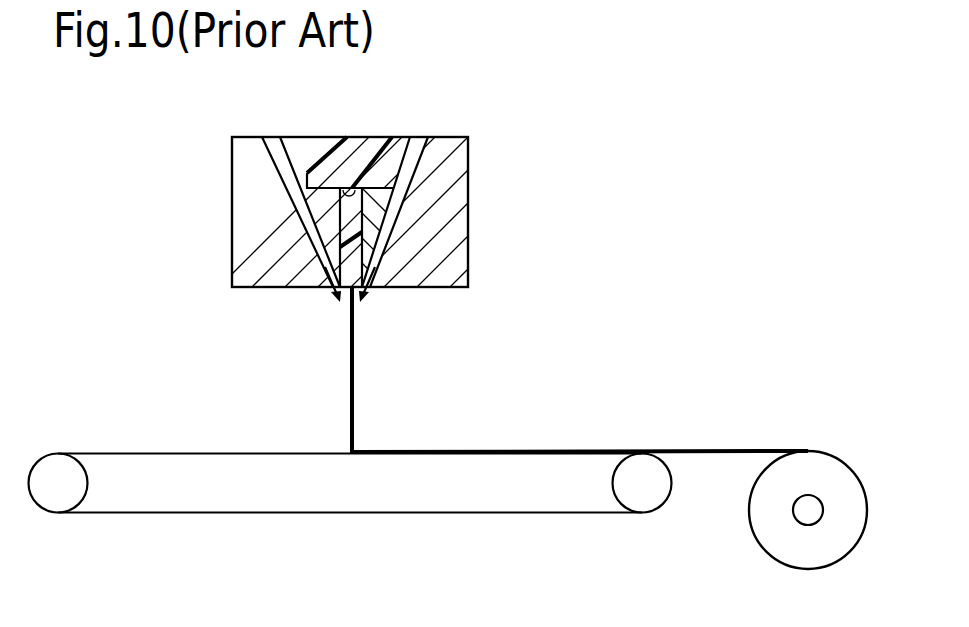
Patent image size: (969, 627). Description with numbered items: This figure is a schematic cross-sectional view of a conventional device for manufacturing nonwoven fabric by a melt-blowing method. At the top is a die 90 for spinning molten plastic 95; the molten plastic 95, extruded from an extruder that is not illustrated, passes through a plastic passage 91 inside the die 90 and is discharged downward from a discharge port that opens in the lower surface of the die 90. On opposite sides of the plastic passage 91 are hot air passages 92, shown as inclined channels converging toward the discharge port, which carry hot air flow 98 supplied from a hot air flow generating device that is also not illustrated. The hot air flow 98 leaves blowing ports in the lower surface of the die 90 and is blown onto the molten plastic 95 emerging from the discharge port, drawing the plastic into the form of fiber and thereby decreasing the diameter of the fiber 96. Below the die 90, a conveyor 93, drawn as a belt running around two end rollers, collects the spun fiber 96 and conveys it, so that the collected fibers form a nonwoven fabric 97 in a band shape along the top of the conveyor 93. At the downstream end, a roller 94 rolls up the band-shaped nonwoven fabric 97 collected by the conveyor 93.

The die 90 is at (480, 163).
The plastic passage 91 is at (343, 196).
The hot air passages 92 is at (272, 146).
The conveyor 93 is at (212, 452).
The roller 94 is at (784, 548).
The molten plastic 95 is at (360, 142).
The fiber 96 is at (355, 372).
The nonwoven fabric 97 is at (510, 449).
The hot air flow 98 is at (318, 288).